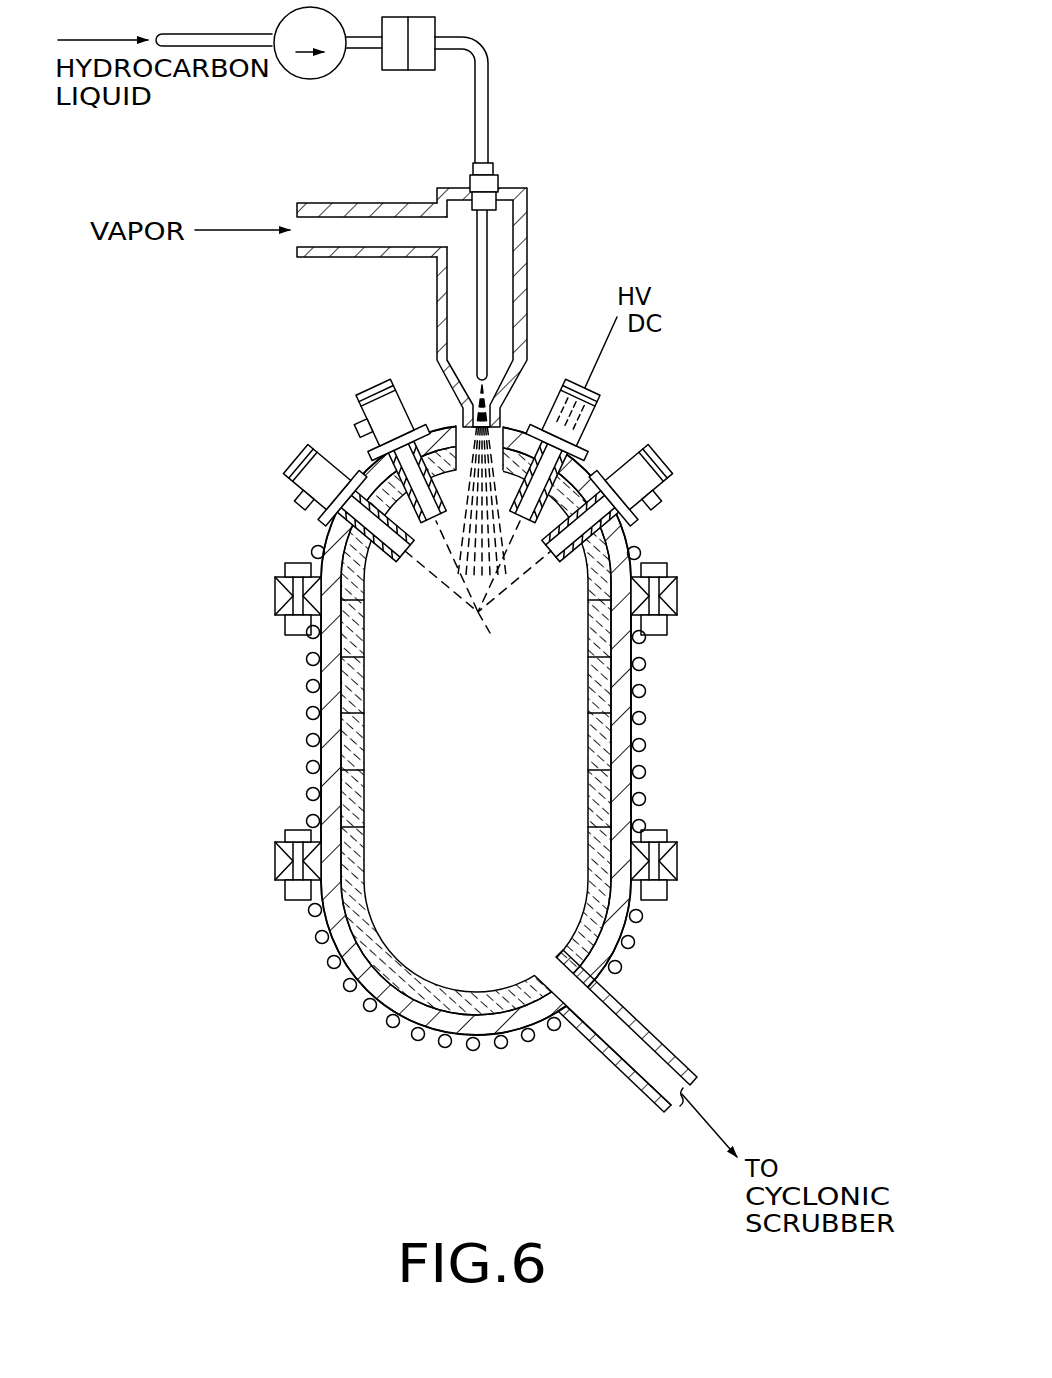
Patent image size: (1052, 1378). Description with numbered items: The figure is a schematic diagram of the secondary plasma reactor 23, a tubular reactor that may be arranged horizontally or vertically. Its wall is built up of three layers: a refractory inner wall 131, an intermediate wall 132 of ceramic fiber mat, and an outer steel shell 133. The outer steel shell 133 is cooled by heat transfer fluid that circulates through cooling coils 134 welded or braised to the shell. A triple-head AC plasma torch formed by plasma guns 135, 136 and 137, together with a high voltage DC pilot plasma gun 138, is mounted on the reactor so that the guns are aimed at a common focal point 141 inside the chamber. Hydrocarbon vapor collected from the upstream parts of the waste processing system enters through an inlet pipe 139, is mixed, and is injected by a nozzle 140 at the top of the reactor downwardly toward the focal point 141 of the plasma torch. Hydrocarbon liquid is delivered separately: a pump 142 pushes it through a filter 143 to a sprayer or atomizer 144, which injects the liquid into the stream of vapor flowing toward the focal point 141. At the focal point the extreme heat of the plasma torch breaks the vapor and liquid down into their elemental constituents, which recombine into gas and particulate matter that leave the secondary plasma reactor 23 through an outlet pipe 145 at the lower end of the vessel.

The secondary plasma reactor 23 is at (446, 737).
The refractory inner wall 131 is at (357, 795).
The intermediate wall 132 is at (613, 790).
The outer steel shell 133 is at (625, 740).
The cooling coils 134 is at (646, 716).
The plasma gun 135 is at (293, 480).
The plasma gun 136 is at (370, 407).
The plasma gun 137 is at (647, 482).
The high voltage DC pilot plasma gun 138 is at (600, 405).
The inlet pipe 139 is at (355, 203).
The nozzle 140 is at (456, 277).
The focal point 141 is at (478, 613).
The pump 142 is at (292, 77).
The filter 143 is at (418, 47).
The sprayer or atomizer 144 is at (485, 247).
The outlet pipe 145 is at (643, 1013).